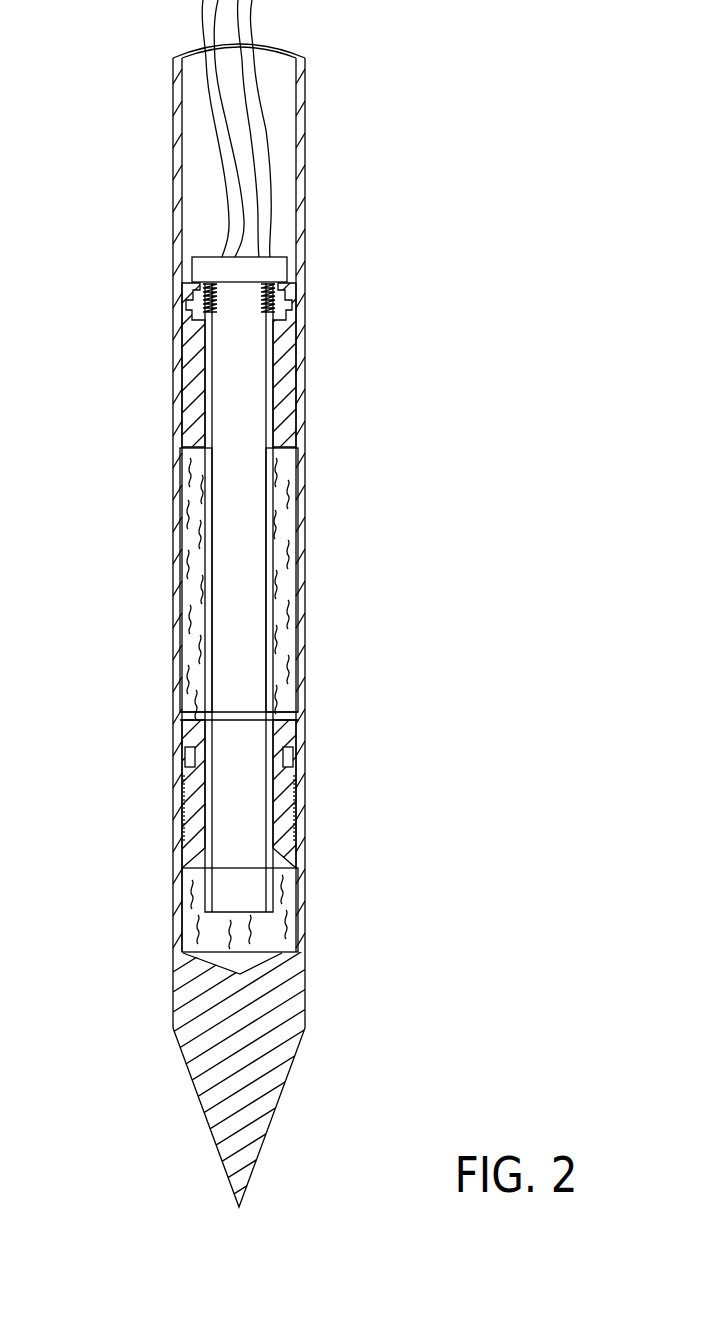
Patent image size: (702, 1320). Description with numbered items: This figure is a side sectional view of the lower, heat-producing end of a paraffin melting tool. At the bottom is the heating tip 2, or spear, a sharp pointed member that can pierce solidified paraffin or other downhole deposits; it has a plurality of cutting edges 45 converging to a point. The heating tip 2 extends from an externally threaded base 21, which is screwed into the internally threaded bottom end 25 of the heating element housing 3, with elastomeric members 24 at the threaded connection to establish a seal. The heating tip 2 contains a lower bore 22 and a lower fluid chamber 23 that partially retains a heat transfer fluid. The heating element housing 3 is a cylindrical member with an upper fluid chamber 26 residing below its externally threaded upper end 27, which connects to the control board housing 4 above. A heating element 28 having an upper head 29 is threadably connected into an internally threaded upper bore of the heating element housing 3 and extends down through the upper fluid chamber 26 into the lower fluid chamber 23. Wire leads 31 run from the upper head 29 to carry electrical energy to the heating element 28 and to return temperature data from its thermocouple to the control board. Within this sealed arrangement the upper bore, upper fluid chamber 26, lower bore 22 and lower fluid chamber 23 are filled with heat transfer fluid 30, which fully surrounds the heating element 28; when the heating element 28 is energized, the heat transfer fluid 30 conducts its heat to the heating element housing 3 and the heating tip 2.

The heating tip 2 is at (305, 955).
The heating element housing 3 is at (305, 583).
The control board housing 4 is at (305, 178).
The externally threaded base 21 is at (285, 817).
The lower bore 22 is at (283, 770).
The lower fluid chamber 23 is at (292, 885).
The elastomeric members 24 is at (192, 748).
The internally threaded bottom end 25 is at (180, 783).
The upper fluid chamber 26 is at (285, 650).
The externally threaded upper end 27 is at (290, 346).
The heating element 28 is at (280, 500).
The upper head 29 is at (275, 272).
The heat transfer fluid 30 is at (205, 541).
The wire leads 31 is at (255, 122).
The cutting edges 45 is at (192, 1078).